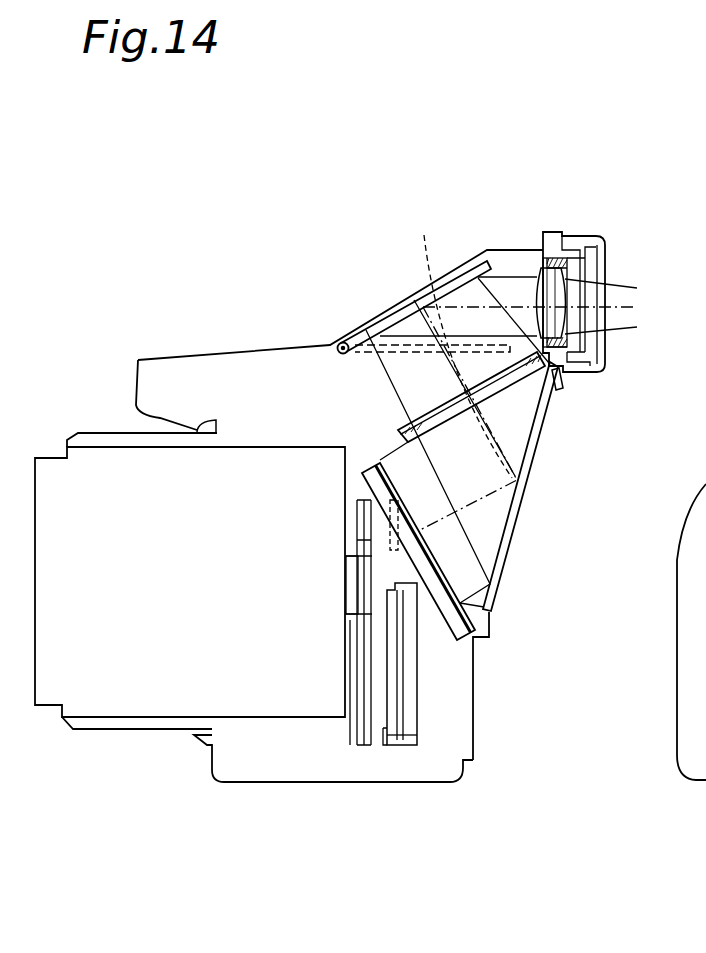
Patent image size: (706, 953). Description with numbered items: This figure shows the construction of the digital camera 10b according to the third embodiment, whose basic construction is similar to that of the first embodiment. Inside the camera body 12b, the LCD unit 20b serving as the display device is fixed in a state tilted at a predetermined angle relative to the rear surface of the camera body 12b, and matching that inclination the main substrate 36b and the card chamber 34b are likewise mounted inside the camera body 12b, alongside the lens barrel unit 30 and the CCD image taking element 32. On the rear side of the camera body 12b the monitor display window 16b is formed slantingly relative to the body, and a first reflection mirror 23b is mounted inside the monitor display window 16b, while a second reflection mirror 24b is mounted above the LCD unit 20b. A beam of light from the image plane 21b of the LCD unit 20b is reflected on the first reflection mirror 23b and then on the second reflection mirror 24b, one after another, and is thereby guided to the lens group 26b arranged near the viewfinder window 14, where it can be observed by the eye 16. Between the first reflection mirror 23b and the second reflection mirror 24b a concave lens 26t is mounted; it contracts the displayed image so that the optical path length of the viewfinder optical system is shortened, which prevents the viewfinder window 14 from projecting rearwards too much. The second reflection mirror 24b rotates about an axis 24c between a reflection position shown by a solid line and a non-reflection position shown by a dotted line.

The camera 10b is at (405, 150).
The camera body 12b is at (297, 783).
The viewfinder window 14 is at (606, 273).
The eye of observer 16 is at (564, 323).
The monitor display window 16b is at (557, 390).
The LCD unit 20b is at (440, 630).
The image plane 21b is at (437, 560).
The first reflection mirror 23b is at (527, 515).
The second reflection mirror 24b is at (440, 280).
The axis 24c is at (339, 339).
The lens group 26b is at (590, 213).
The concave lens 26t is at (437, 410).
The lens barrel unit 30 is at (115, 698).
The CCD image taking element 32 is at (343, 578).
The card chamber 34b is at (410, 700).
The main substrate 36b is at (390, 733).